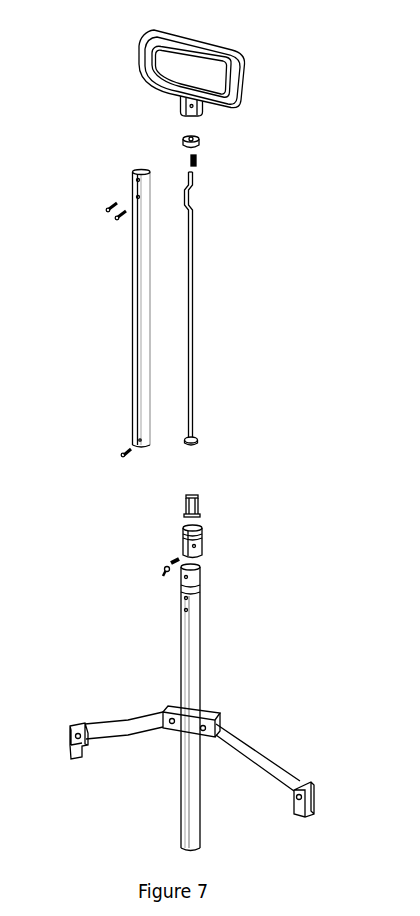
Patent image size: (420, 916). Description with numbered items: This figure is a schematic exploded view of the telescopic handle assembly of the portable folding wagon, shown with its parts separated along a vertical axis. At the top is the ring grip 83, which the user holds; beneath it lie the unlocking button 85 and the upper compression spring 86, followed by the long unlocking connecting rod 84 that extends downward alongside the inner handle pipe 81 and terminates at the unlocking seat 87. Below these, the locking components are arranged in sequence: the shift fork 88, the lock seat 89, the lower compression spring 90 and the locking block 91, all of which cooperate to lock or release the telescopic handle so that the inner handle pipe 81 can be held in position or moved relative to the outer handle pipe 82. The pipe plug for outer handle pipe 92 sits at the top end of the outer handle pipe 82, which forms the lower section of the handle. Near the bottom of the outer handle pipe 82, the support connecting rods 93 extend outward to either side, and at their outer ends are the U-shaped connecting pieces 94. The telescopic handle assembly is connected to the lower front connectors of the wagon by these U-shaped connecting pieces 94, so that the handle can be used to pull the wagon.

The inner handle pipe 81 is at (137, 278).
The outer handle pipe 82 is at (197, 672).
The ring grip 83 is at (232, 68).
The unlocking connecting rod 84 is at (197, 263).
The unlocking button 85 is at (198, 142).
The upper compression spring 86 is at (198, 163).
The unlocking seat 87 is at (198, 437).
The shift fork 88 is at (194, 503).
The lock seat 89 is at (182, 533).
The lower compression spring 90 is at (169, 560).
The locking block 91 is at (160, 576).
The pipe plug for outer handle pipe 92 is at (193, 577).
The support connecting rods 93 is at (233, 741).
The U-shaped connecting pieces 94 is at (68, 733).